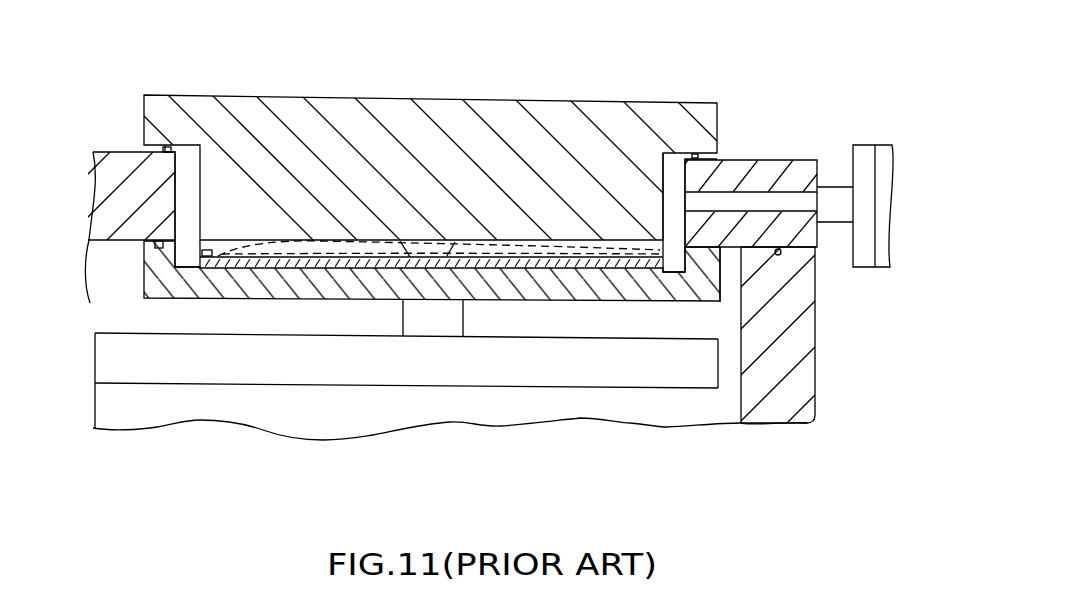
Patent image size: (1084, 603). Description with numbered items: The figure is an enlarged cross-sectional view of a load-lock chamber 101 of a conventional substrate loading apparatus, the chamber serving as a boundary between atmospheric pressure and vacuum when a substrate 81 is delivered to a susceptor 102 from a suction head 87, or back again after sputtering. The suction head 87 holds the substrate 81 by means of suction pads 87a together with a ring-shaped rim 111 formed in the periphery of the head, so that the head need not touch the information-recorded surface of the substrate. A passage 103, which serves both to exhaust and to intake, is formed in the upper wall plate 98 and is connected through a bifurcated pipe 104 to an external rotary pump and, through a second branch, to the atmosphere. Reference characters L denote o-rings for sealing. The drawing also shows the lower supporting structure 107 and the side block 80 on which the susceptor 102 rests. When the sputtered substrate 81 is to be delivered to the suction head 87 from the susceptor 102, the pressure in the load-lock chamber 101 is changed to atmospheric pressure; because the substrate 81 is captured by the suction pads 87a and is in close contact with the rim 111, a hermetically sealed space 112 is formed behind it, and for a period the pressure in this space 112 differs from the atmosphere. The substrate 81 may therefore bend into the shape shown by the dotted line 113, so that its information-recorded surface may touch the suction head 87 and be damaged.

The suction head 87 is at (485, 97).
The suction pads 87a is at (395, 241).
The upper wall plate 98 is at (107, 152).
The load-lock chamber 101 is at (188, 170).
The susceptor 102 is at (640, 285).
The passage 103 is at (747, 205).
The bifurcated pipe 104 is at (884, 162).
The support frame 107 is at (423, 370).
The ring-shaped rim 111 is at (713, 302).
The hermetically sealed space 112 is at (197, 268).
The dotted line 113 is at (307, 250).
The substrate 81 is at (600, 265).
The side block 80 is at (797, 400).
The o-rings L is at (165, 147).